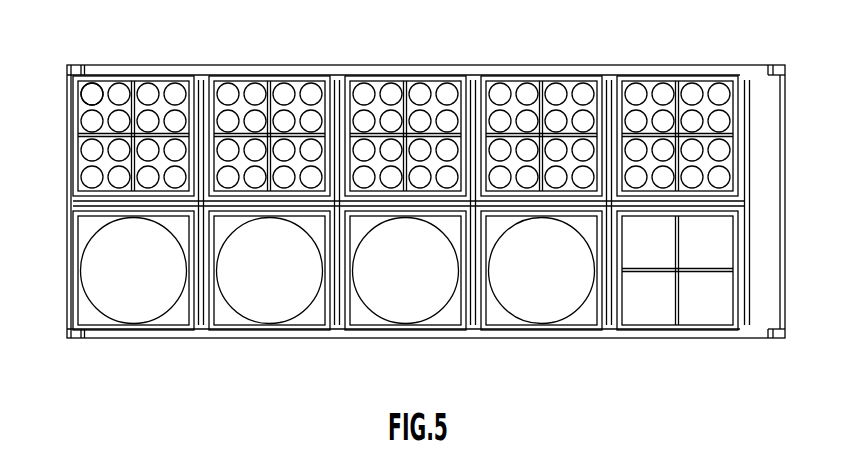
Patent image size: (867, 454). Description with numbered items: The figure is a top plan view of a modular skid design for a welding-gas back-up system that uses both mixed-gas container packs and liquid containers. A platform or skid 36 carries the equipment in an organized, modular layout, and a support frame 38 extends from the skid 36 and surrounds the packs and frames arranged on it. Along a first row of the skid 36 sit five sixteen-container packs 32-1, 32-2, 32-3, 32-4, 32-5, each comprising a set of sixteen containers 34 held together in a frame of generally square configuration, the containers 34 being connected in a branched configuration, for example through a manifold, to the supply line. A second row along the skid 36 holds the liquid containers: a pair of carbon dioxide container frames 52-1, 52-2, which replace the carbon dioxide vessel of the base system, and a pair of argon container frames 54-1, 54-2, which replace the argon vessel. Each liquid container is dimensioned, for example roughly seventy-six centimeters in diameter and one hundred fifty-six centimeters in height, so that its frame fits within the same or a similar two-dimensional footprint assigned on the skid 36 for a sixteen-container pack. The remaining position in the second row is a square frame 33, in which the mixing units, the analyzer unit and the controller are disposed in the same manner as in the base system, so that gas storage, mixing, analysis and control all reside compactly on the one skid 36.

The 16-container pack 32-1 is at (132, 76).
The 16-container pack 32-2 is at (268, 76).
The 16-container pack 32-3 is at (403, 76).
The 16-container pack 32-4 is at (538, 76).
The 16-container pack 32-5 is at (673, 76).
The square frame 33 is at (713, 308).
The container 34 is at (82, 91).
The skid 36 is at (767, 142).
The support frame 38 is at (786, 244).
The CO2 container frame 52-1 is at (158, 330).
The CO2 container frame 52-2 is at (283, 330).
The Ar container frame 54-1 is at (398, 330).
The Ar container frame 54-2 is at (550, 330).